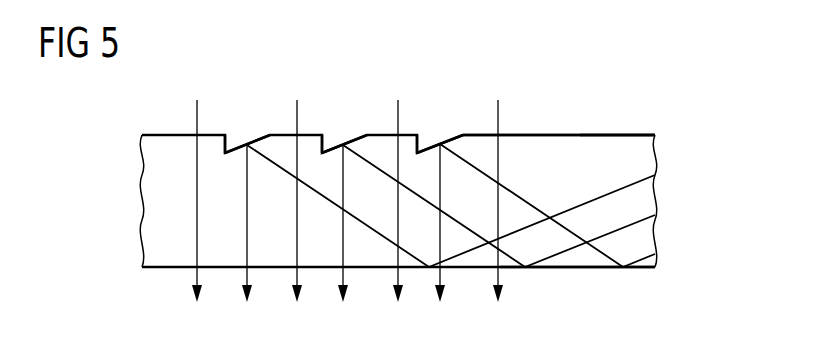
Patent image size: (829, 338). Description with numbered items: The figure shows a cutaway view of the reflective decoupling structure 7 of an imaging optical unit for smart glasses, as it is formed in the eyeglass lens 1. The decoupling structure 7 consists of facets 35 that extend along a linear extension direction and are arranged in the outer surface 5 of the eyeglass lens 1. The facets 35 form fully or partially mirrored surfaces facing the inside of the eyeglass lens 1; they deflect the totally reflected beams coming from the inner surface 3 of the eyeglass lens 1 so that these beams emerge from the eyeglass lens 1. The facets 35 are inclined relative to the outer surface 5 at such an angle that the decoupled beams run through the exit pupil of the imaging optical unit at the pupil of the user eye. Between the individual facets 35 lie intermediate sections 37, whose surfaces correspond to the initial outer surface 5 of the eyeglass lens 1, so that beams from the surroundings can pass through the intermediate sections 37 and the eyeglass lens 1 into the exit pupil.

The decoupling structure 7 is at (158, 103).
The intermediate sections 37 is at (216, 133).
The facets 35 is at (255, 138).
The eyeglass lens 1 is at (558, 149).
The outer surface 5 is at (613, 135).
The inner surface 3 is at (577, 268).